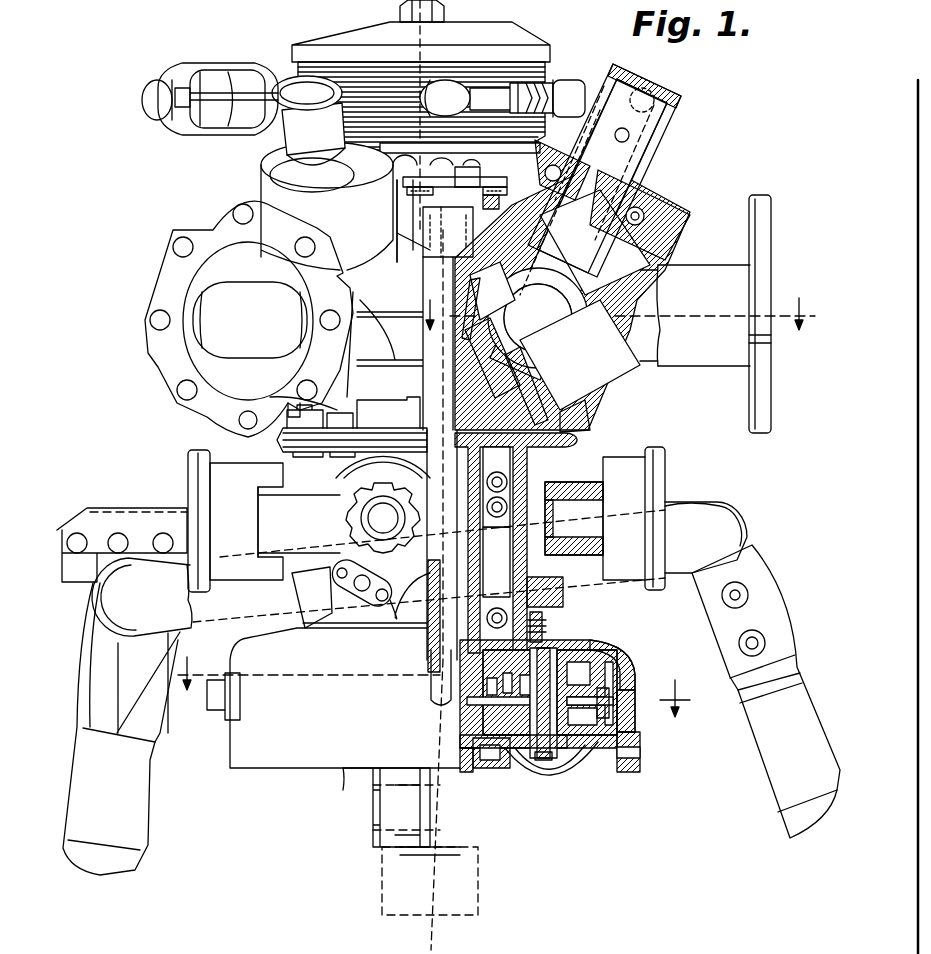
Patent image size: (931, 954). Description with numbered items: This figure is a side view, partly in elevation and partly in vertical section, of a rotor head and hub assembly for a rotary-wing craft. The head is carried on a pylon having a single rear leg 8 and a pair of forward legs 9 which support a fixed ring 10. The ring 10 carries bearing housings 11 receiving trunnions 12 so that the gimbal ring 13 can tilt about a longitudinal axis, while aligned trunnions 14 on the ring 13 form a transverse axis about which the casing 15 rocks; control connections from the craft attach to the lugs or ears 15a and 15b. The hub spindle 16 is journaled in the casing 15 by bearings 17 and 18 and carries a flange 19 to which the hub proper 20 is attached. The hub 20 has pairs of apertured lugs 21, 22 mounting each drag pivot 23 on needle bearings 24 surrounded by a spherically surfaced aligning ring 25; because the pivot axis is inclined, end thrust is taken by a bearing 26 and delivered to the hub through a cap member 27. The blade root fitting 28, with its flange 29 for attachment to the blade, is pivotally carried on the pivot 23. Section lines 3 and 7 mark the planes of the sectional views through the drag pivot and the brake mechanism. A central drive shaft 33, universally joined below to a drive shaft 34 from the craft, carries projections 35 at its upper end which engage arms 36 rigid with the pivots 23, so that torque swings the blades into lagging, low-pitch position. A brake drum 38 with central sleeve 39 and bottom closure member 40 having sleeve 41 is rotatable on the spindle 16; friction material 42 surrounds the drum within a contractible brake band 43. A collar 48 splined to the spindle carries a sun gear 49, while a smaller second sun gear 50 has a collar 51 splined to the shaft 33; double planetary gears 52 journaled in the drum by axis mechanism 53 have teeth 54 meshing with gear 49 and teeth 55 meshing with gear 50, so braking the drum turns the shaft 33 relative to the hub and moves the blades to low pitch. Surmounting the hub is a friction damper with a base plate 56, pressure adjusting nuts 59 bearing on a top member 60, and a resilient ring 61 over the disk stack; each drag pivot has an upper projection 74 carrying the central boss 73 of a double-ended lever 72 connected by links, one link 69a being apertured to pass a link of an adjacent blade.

The section line 3- 3 is at (620, 305).
The section line 7- 7 is at (431, 681).
The rear leg 8 is at (775, 777).
The forward legs 9 is at (125, 824).
The fixed bracket or ring 10 is at (187, 617).
The bearing housings 11 is at (215, 487).
The trunnions 12 is at (580, 482).
The gimbal ring 13 is at (255, 482).
The aligned trunnions 14 is at (360, 518).
The casing 15 is at (525, 480).
The lug or ear 15a is at (372, 770).
The lug or ear 15b is at (640, 768).
The hub spindle 16 is at (462, 486).
The bearing 17 is at (530, 590).
The bearing 18 is at (500, 478).
The flange 19 is at (276, 444).
The hub proper 20 is at (478, 288).
The apertured lug 21 is at (648, 255).
The apertured lug 22 is at (580, 430).
The lag-lead or drag pivot 23 is at (540, 375).
The needle bearings 24 is at (540, 238).
The surrounding ring 25 is at (570, 300).
The bearing 26 is at (668, 190).
The cap member 27 is at (670, 212).
The blade root fitting 28 is at (694, 360).
The flange 29 is at (762, 212).
The central drive shaft 33 is at (470, 548).
The drive shaft 34 is at (470, 878).
The projections 35 is at (405, 268).
The arms 36 is at (325, 319).
The brake drum 38 is at (605, 656).
The central sleeve 39 is at (428, 655).
The bottom closure member 40 is at (518, 770).
The sleeve 41 is at (473, 740).
The friction material 42 is at (626, 662).
The contractible brake band 43 is at (630, 680).
The collar 48 is at (475, 672).
The sun gear 49 is at (467, 702).
The second sun gear 50 is at (430, 712).
The central collar 51 is at (460, 752).
The double planetary gears 52 is at (612, 710).
The axis mechanism 53 is at (572, 752).
The set of teeth 54 is at (548, 632).
The set of teeth 55 is at (548, 762).
The base plate 56 is at (507, 166).
The pressure adjusting nuts 59 is at (443, 14).
The top member 60 is at (483, 38).
The resilient or rubber ring 61 is at (546, 70).
The link 69a is at (242, 68).
The double-ended lever 72 is at (655, 80).
The central boss 73 is at (664, 132).
The upper projection 74 is at (668, 110).